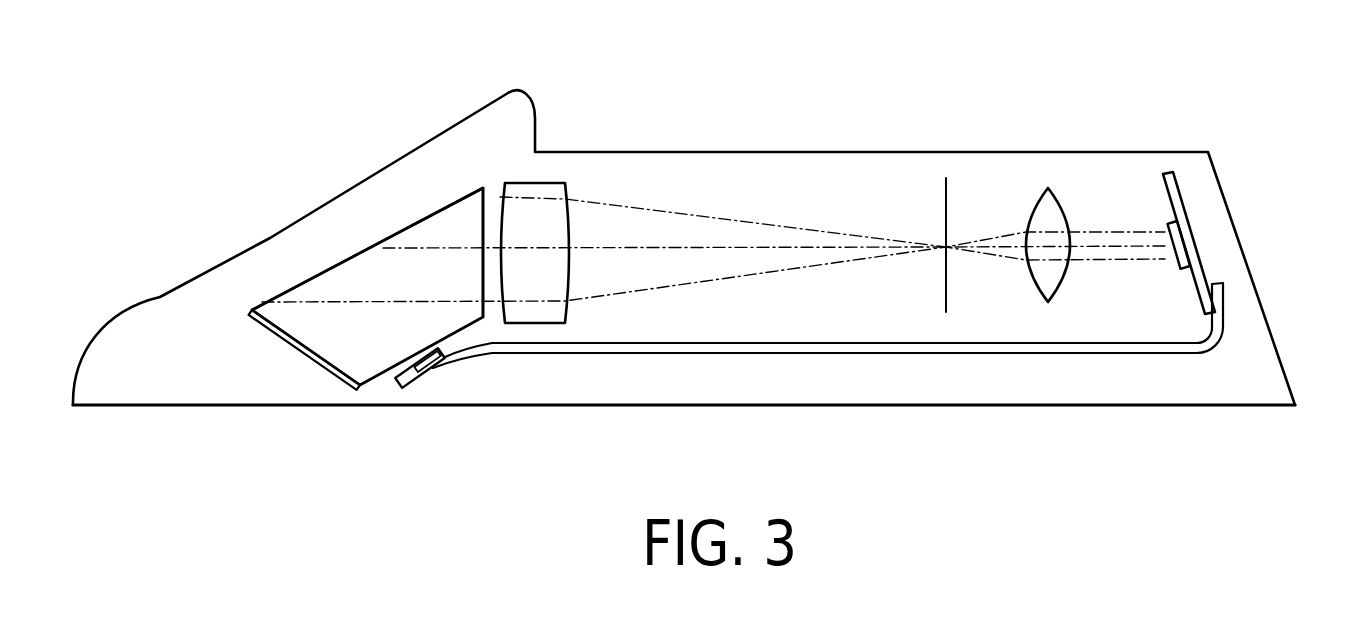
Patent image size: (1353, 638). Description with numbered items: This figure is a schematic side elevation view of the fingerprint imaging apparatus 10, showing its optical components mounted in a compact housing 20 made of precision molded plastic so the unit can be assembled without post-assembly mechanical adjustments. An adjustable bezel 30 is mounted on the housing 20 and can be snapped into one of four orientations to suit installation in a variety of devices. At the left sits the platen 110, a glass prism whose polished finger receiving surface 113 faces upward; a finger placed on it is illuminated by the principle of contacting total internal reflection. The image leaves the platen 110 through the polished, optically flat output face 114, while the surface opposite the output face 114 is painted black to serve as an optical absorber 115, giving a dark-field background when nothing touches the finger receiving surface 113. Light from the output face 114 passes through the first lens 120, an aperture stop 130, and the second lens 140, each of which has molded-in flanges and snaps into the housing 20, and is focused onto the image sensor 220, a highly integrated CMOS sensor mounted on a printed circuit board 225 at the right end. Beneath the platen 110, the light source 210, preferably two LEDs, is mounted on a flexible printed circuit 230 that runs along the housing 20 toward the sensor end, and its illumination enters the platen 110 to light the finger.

The fingerprint imaging apparatus 10 is at (227, 171).
The housing 20 is at (165, 406).
The adjustable bezel 30 is at (367, 172).
The platen 110 is at (428, 208).
The finger receiving surface 113 is at (324, 271).
The output face 114 is at (482, 269).
The optical absorber 115 is at (303, 348).
The first lens 120 is at (557, 185).
The aperture stop 130 is at (945, 190).
The second lens 140 is at (1048, 188).
The light source 210 is at (430, 378).
The image sensor 220 is at (1180, 215).
The printed circuit board 225 is at (1195, 268).
The flexible printed circuit 230 is at (855, 354).